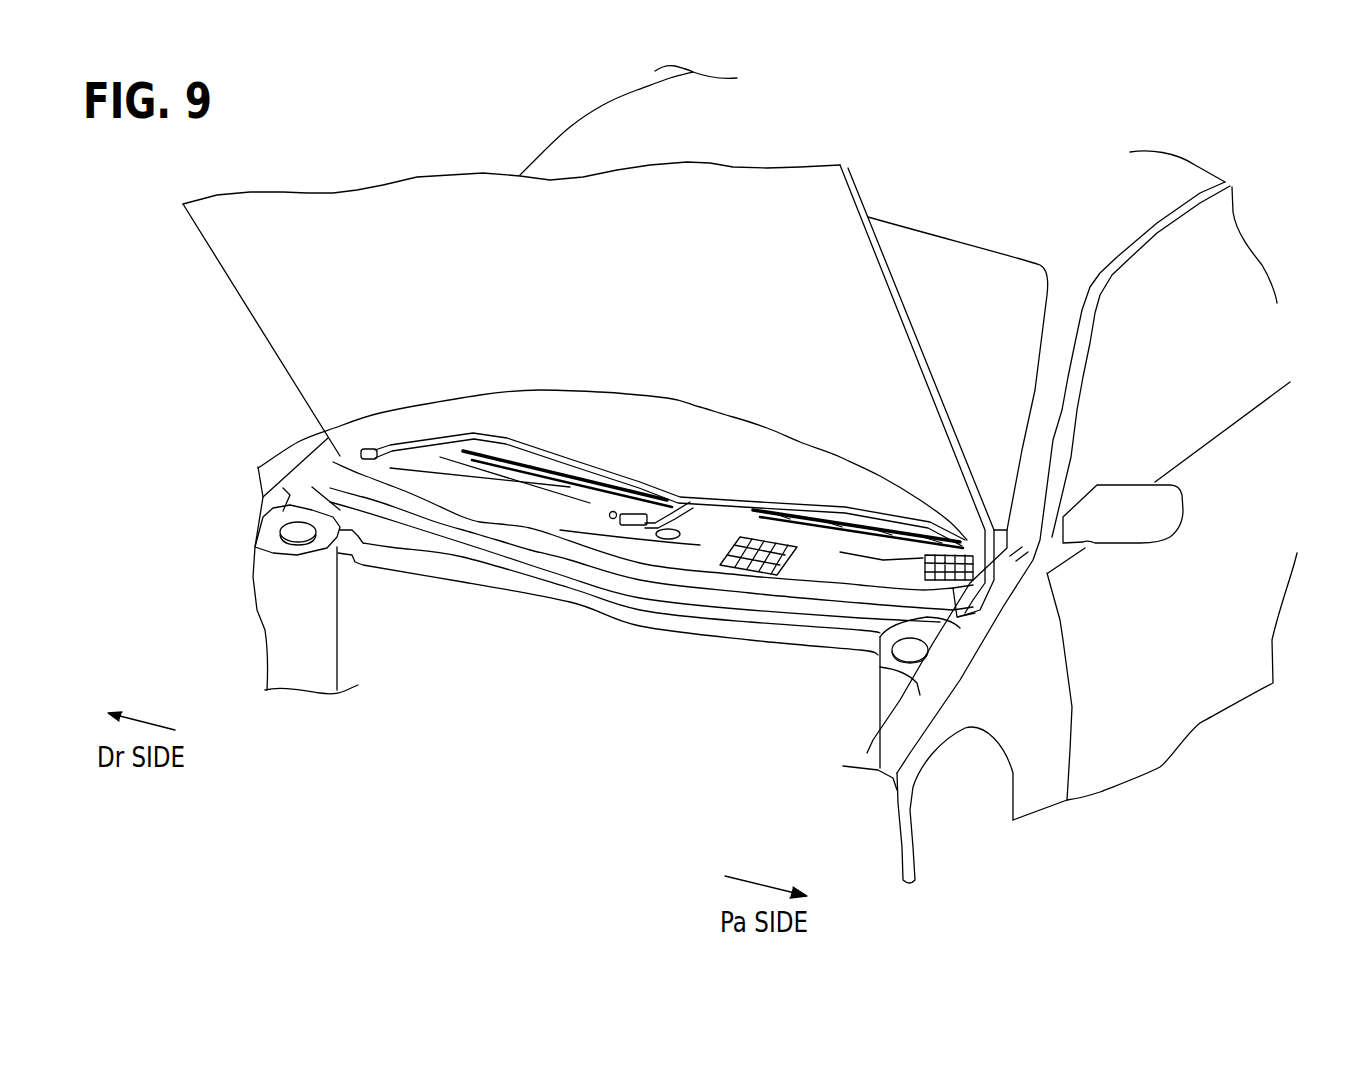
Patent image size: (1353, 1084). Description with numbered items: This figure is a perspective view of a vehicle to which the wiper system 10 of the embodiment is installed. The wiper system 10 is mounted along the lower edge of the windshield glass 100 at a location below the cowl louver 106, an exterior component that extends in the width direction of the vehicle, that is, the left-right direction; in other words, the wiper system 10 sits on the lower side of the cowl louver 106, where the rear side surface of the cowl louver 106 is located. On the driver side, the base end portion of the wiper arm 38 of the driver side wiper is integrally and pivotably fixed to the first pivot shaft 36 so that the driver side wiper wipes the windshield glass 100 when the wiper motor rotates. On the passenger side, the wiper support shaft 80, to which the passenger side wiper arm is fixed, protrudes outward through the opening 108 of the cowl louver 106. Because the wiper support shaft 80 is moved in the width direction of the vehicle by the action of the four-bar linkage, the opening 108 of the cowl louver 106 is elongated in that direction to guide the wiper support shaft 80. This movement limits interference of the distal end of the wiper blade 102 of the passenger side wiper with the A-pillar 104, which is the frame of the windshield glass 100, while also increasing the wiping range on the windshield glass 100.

The wiper system 10 is at (688, 476).
The first pivot shaft 36 is at (362, 455).
The wiper arm 38 is at (430, 437).
The wiper support shaft 80 is at (609, 517).
The windshield glass 100 is at (967, 270).
The wiper blade 102 is at (848, 535).
The A-pillar 104 is at (1050, 373).
The cowl louver 106 is at (585, 530).
The opening 108 is at (670, 530).